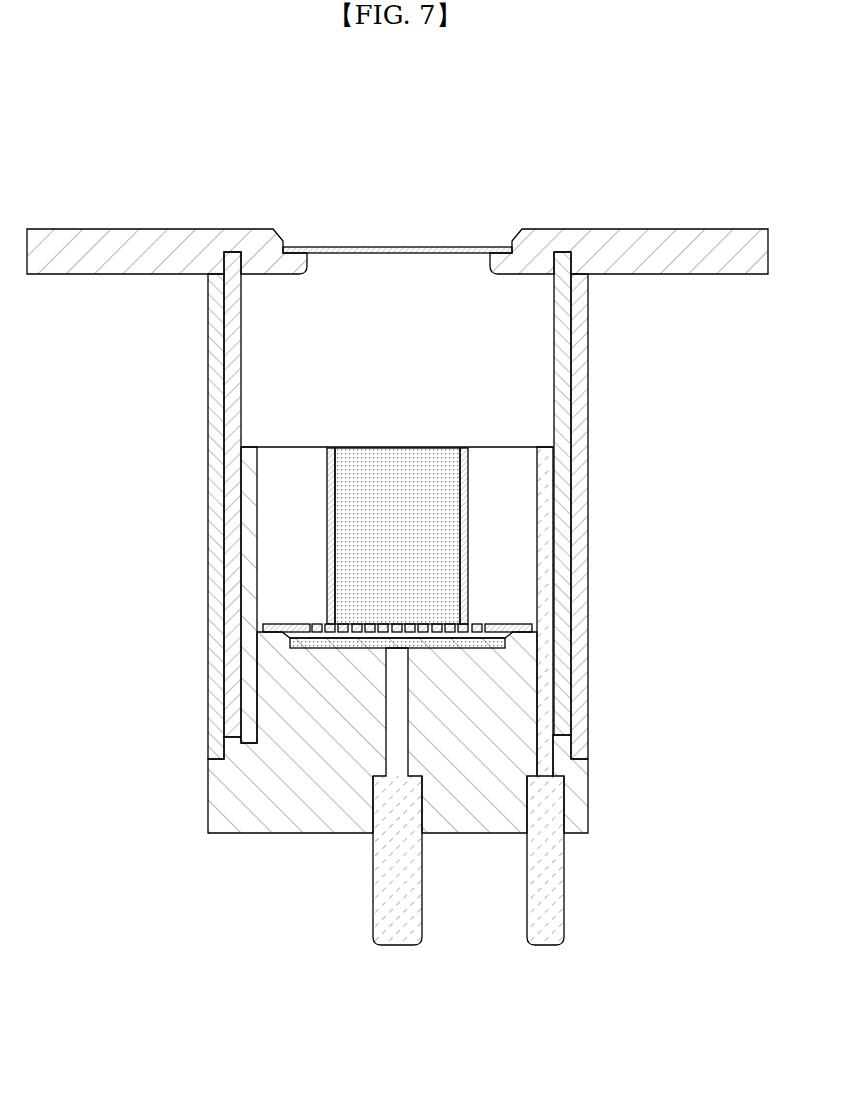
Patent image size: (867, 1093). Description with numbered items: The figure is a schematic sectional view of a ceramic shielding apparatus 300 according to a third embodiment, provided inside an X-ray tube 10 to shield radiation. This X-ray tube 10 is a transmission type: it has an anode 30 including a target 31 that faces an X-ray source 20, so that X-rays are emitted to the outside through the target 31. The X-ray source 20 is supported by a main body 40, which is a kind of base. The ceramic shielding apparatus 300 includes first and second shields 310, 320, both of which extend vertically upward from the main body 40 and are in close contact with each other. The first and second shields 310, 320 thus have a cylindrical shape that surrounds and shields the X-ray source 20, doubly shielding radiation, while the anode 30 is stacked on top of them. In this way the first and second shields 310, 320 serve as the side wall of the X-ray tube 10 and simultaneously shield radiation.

The X-ray tube 10 is at (383, 126).
The X-ray source 20 is at (463, 432).
The anode 30 is at (628, 247).
The target 31 is at (398, 247).
The main body 40 is at (297, 808).
The ceramic shielding apparatus 300 is at (123, 378).
The first shield 310 is at (232, 405).
The second shield 320 is at (215, 470).